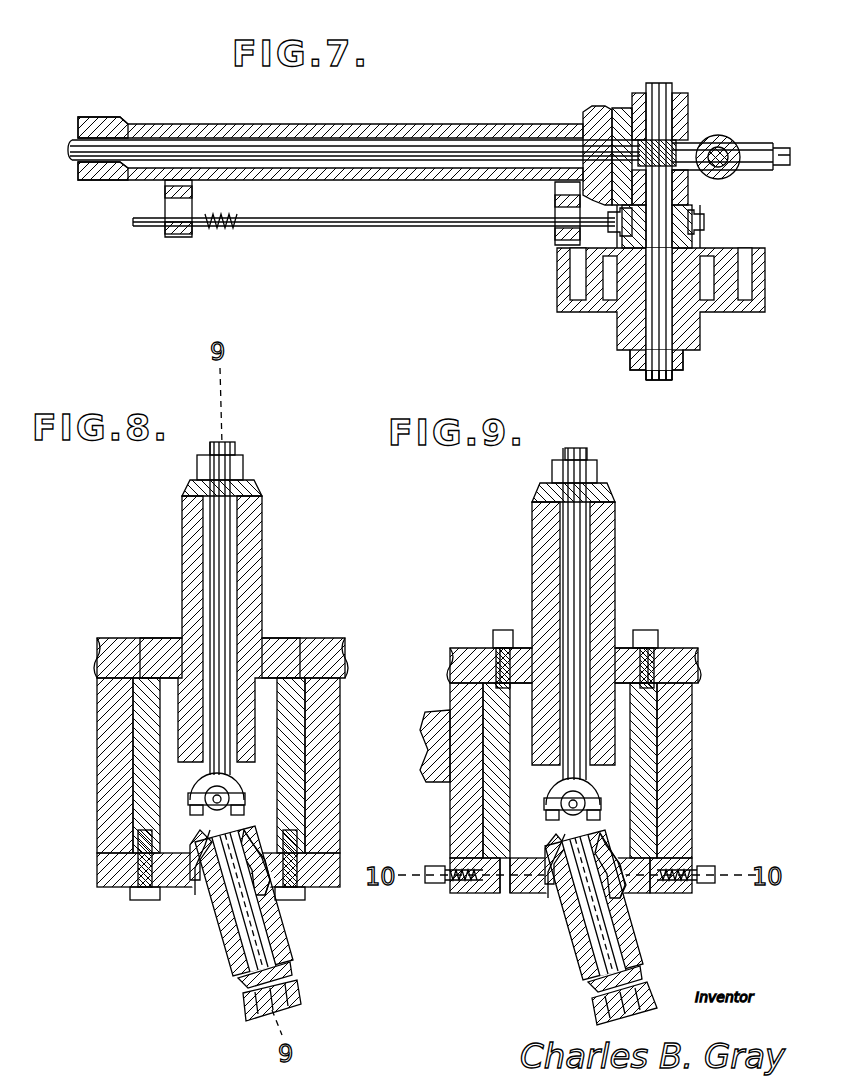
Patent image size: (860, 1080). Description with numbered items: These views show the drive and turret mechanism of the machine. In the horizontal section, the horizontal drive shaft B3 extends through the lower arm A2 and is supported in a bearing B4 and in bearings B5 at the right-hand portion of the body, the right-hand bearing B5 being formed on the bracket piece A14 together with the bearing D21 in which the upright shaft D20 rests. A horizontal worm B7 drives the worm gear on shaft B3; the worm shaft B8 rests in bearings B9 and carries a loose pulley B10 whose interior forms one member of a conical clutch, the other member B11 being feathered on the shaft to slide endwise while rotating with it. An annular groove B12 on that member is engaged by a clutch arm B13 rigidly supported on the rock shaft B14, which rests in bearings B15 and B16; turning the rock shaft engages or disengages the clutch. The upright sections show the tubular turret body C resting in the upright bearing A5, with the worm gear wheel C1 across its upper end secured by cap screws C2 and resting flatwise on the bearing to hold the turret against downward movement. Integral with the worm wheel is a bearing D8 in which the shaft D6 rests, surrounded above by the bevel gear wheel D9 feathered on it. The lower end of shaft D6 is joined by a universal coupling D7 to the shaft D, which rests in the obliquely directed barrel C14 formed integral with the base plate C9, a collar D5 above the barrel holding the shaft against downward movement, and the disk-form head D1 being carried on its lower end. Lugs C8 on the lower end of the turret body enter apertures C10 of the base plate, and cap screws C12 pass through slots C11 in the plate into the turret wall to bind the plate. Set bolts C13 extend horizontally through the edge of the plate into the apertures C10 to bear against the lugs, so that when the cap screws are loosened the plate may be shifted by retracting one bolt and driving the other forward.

In FIG. 7, the lower arm A2 is at (372, 124).
In FIG. 7, the bearing B4 is at (104, 128).
In FIG. 7, the horizontal drive shaft B3 is at (152, 150).
In FIG. 7, the bracket piece A14 is at (592, 106).
In FIG. 7, the bearings B5 is at (582, 128).
In FIG. 7, the bearings B9 is at (652, 83).
In FIG. 7, the upright shaft D20 is at (712, 136).
In FIG. 7, the bearing D21 is at (722, 148).
In FIG. 7, the rock shaft B14 is at (232, 230).
In FIG. 7, the bearing B16 is at (172, 238).
In FIG. 7, the bearing B15 is at (555, 205).
In FIG. 7, the clutch arm B13 is at (606, 224).
In FIG. 7, the horizontal worm B7 is at (705, 220).
In FIG. 7, the annular groove B12 is at (694, 238).
In FIG. 7, the clutch member B11 is at (598, 255).
In FIG. 7, the loose pulley B10 is at (568, 298).
In FIG. 7, the worm shaft B8 is at (660, 378).
In FIG. 8, the shaft D6 is at (232, 609).
In FIG. 9, the shaft D6 is at (588, 606).
In FIG. 8, the bevel gear wheel D9 is at (182, 490).
In FIG. 9, the bevel gear wheel D9 is at (610, 490).
In FIG. 8, the bearing D8 is at (182, 586).
In FIG. 9, the bearing D8 is at (615, 560).
In FIG. 8, the worm gear wheel C1 is at (97, 660).
In FIG. 9, the worm gear wheel C1 is at (700, 664).
In FIG. 8, the upright bearing A5 is at (98, 770).
In FIG. 9, the upright bearing A5 is at (680, 735).
In FIG. 8, the turret body C is at (146, 712).
In FIG. 9, the turret body C is at (645, 777).
In FIG. 8, the universal coupling D7 is at (214, 812).
In FIG. 9, the universal coupling D7 is at (570, 818).
In FIG. 8, the base plate C9 is at (100, 868).
In FIG. 9, the base plate C9 is at (660, 895).
In FIG. 8, the collar D5 is at (186, 892).
In FIG. 9, the collar D5 is at (544, 895).
In FIG. 8, the shaft D is at (244, 950).
In FIG. 9, the shaft D is at (605, 942).
In FIG. 8, the bearing or barrel C14 is at (248, 985).
In FIG. 9, the bearing or barrel C14 is at (598, 990).
In FIG. 8, the disk-form head D1 is at (244, 1010).
In FIG. 9, the disk-form head D1 is at (648, 990).
In FIG. 8, the slots C11 is at (138, 875).
In FIG. 8, the cap screw C12 is at (135, 900).
In FIG. 9, the cap screws C2 is at (496, 640).
In FIG. 9, the lugs C8 is at (478, 895).
In FIG. 9, the apertures C10 is at (690, 858).
In FIG. 9, the set bolt C13 is at (436, 865).